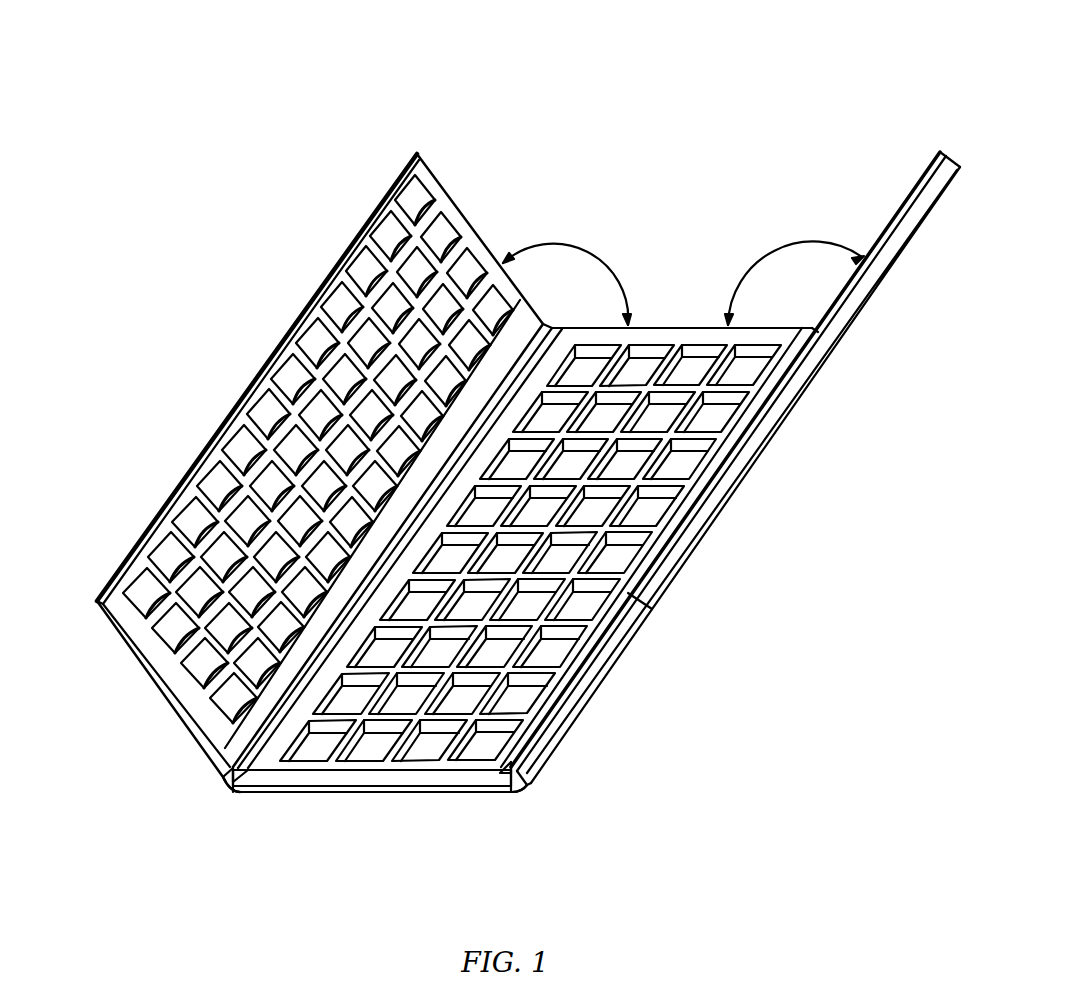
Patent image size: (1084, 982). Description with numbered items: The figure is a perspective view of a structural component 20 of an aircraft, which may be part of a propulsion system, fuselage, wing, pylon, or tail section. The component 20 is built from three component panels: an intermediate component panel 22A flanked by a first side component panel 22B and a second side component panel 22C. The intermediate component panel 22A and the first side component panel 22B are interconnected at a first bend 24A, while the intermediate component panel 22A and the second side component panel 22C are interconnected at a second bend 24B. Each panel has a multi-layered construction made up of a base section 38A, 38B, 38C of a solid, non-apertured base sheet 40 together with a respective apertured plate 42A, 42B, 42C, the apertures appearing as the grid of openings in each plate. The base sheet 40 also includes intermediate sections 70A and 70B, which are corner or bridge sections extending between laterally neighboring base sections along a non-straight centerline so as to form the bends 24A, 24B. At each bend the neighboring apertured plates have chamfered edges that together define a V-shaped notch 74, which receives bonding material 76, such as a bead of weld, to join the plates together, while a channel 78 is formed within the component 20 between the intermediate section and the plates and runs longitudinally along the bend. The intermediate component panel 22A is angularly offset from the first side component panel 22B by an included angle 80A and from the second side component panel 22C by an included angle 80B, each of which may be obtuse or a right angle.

The structural component 20 is at (741, 92).
The intermediate component panel 22A is at (466, 574).
The first side component panel 22B is at (292, 452).
The second side component panel 22C is at (735, 455).
The first bend 24A is at (217, 820).
The second bend 24B is at (530, 820).
The base section 38A is at (393, 794).
The base section 38B is at (132, 672).
The base section 38C is at (598, 682).
The base sheet 40 is at (78, 592).
The apertured plate 42A is at (350, 780).
The apertured plate 42B is at (165, 684).
The apertured plate 42C is at (613, 637).
The intermediate section 70A is at (220, 791).
The intermediate section 70B is at (530, 793).
The notch 74 is at (250, 785).
The bonding material 76 is at (556, 315).
The channel 78 is at (230, 794).
The included angle 80A is at (573, 248).
The included angle 80B is at (778, 248).